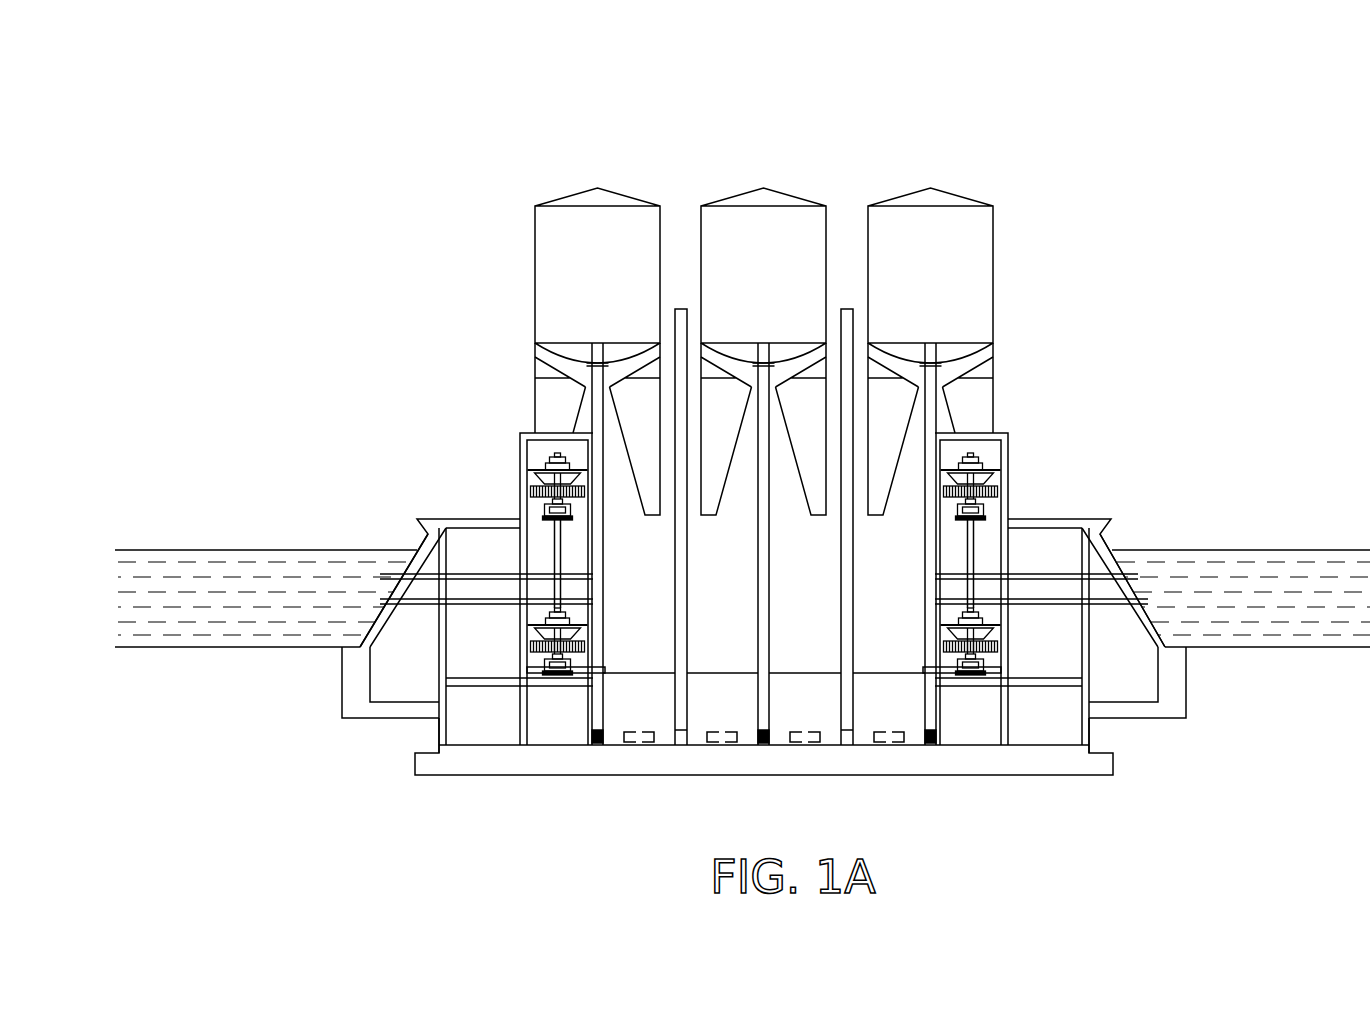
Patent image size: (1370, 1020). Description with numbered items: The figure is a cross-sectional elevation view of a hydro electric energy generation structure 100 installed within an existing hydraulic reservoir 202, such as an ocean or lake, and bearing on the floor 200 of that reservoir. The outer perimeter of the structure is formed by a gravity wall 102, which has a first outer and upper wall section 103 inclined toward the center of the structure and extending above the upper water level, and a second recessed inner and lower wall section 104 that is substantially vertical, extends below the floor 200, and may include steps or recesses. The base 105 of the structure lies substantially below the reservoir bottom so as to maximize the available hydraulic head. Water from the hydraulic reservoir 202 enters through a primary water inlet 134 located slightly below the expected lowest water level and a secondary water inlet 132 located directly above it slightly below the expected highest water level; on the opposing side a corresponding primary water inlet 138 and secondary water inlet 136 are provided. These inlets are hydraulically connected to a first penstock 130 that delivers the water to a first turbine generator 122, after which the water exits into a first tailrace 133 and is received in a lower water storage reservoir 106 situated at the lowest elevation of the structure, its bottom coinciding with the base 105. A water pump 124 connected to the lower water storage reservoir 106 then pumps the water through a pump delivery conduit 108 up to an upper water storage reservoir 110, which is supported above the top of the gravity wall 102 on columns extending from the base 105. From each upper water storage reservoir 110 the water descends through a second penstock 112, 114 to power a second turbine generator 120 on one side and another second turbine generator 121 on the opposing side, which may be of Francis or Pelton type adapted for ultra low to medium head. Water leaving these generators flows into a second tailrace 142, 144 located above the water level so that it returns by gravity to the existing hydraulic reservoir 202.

The hydro electric energy generation structure 100 is at (1004, 108).
The gravity wall 102 is at (410, 648).
The first outer and upper wall section 103 is at (360, 630).
The second recessed inner and lower wall section 104 is at (433, 733).
The base 105 is at (812, 777).
The lower water storage reservoir 106 is at (622, 708).
The pump delivery conduit 108 is at (596, 373).
The upper water storage reservoir 110 is at (623, 218).
The second penstock 112 is at (580, 408).
The second penstock 114 is at (627, 440).
The second turbine generator 120 is at (548, 455).
The second turbine generator 121 is at (980, 455).
The first turbine generator 122 is at (600, 616).
The water pump 124 is at (598, 747).
The first penstock 130 is at (488, 605).
The secondary water inlet 132 is at (380, 577).
The first tailrace 133 is at (606, 666).
The primary water inlet 134 is at (380, 602).
The secondary water inlet 136 is at (1135, 578).
The primary water inlet 138 is at (1160, 605).
The second tailrace 142 is at (415, 530).
The second tailrace 144 is at (1108, 531).
The floor 200 is at (204, 759).
The hydraulic reservoir 202 is at (208, 611).